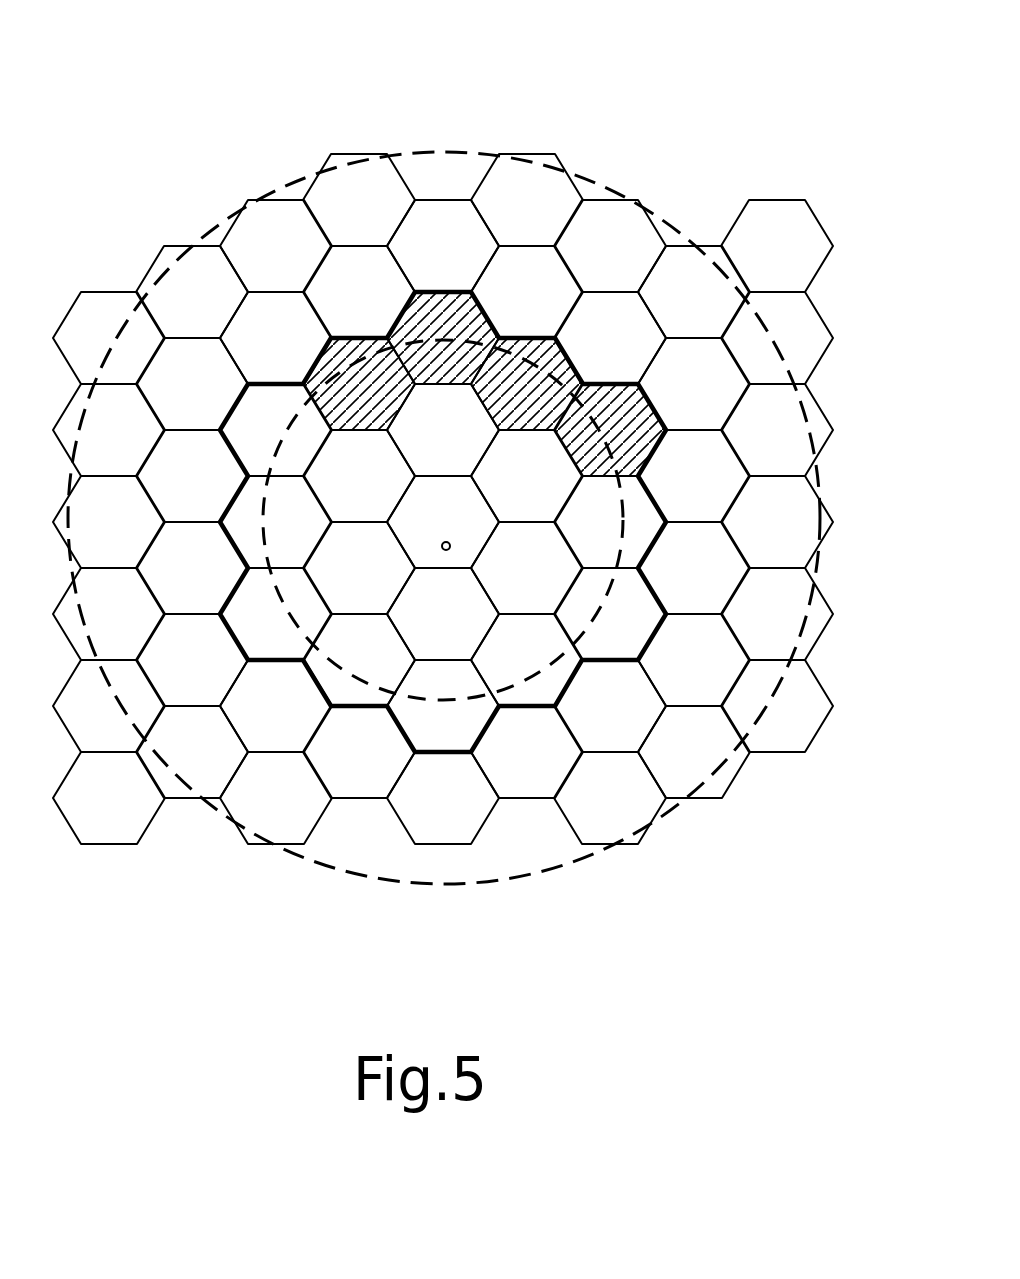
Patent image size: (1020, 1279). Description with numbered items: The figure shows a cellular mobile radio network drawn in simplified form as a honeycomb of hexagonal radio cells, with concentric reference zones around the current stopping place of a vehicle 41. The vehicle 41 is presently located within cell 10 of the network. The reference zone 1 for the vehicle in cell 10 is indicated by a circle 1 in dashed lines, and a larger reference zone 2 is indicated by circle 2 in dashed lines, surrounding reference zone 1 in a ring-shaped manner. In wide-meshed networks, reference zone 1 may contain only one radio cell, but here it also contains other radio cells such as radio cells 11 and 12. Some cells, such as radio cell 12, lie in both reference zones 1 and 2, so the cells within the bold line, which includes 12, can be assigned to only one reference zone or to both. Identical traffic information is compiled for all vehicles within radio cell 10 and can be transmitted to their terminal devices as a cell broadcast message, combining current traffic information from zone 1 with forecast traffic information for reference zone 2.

The reference zone 1 is at (269, 405).
The reference zone 2 is at (127, 275).
The cell 10 is at (450, 527).
The radio cell 11 is at (445, 420).
The radio cell 12 is at (640, 385).
The vehicle 41 is at (470, 543).